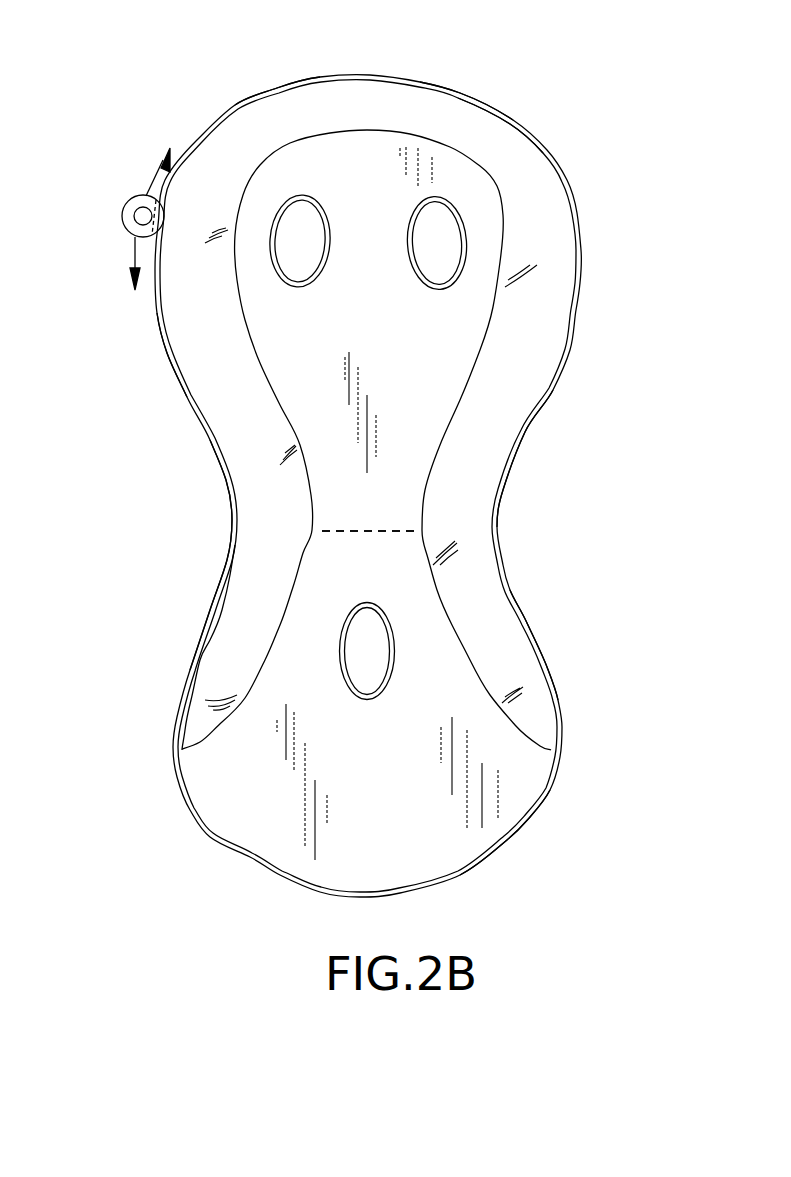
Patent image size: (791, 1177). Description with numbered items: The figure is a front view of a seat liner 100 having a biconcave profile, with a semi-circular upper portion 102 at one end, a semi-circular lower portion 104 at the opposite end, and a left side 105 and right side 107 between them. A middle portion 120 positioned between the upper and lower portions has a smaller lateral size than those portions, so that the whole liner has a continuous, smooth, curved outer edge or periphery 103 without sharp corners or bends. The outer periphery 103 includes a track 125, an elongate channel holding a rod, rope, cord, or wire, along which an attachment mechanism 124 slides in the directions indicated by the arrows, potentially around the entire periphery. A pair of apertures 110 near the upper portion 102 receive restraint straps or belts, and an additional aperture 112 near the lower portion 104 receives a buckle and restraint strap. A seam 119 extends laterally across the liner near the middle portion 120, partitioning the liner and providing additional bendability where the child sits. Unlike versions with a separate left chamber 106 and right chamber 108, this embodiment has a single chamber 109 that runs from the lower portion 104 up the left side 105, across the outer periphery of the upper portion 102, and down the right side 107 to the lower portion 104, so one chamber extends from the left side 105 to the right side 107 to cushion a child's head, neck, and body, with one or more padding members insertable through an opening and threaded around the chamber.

The seat liner 100 is at (602, 360).
The upper portion 102 is at (500, 130).
The outer edge or periphery 103 is at (451, 92).
The lower portion 104 is at (501, 838).
The left side 105 is at (190, 613).
The left chamber 106 is at (183, 328).
The right side 107 is at (562, 642).
The right chamber 108 is at (500, 437).
The single chamber 109 is at (541, 190).
The apertures 110 is at (288, 213).
The additional aperture 112 is at (381, 650).
The seam 119 is at (322, 532).
The middle portion 120 is at (212, 465).
The attachment mechanism 124 is at (135, 200).
The track 125 is at (277, 93).